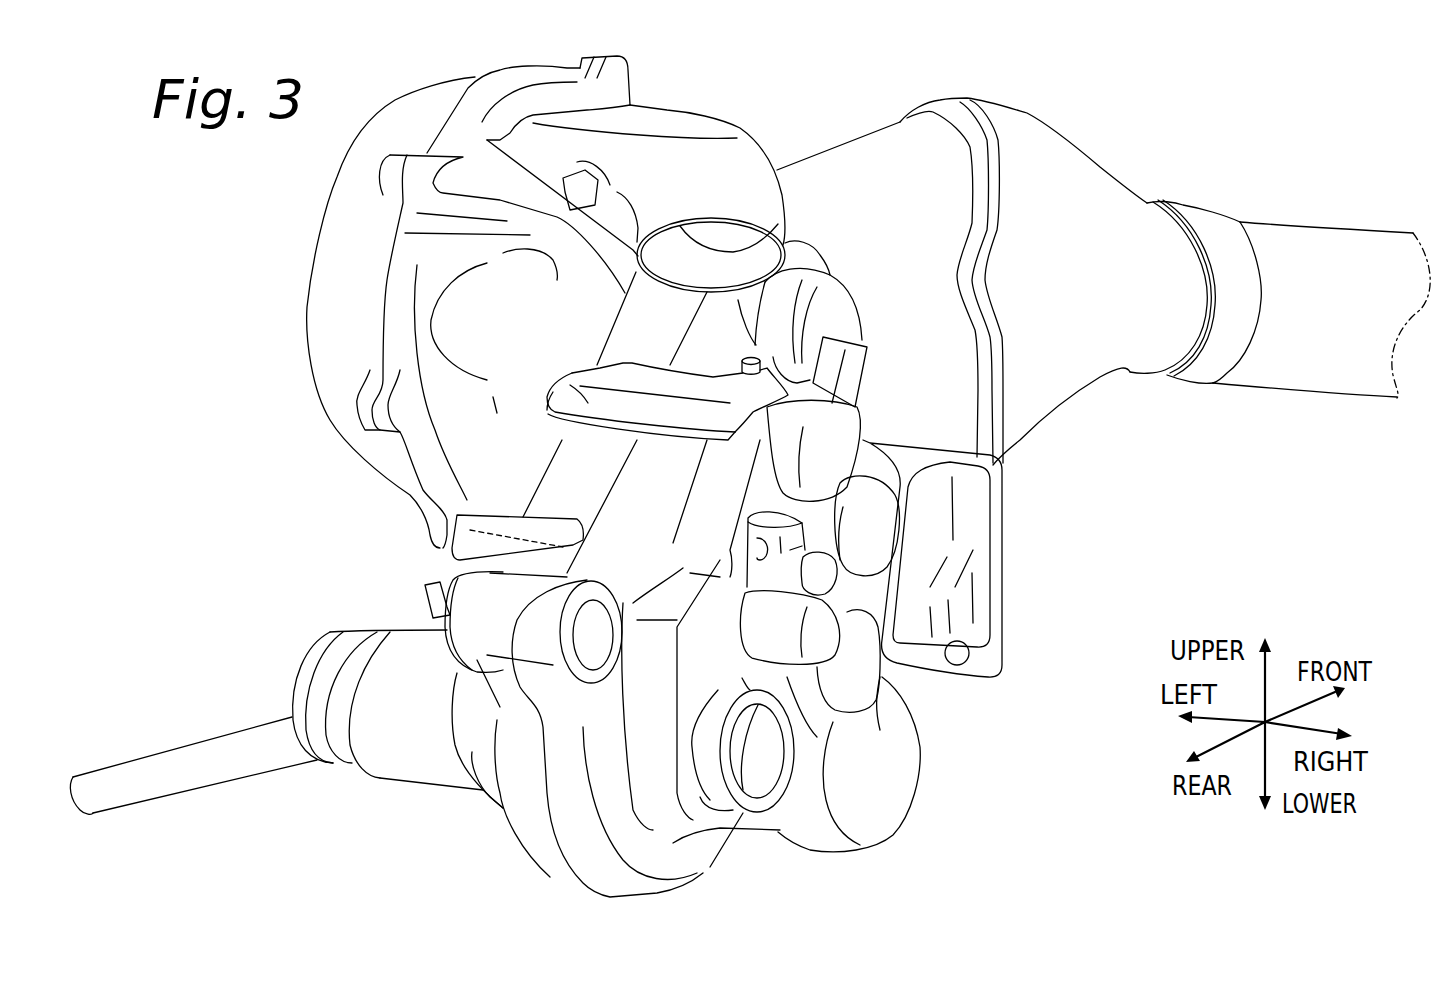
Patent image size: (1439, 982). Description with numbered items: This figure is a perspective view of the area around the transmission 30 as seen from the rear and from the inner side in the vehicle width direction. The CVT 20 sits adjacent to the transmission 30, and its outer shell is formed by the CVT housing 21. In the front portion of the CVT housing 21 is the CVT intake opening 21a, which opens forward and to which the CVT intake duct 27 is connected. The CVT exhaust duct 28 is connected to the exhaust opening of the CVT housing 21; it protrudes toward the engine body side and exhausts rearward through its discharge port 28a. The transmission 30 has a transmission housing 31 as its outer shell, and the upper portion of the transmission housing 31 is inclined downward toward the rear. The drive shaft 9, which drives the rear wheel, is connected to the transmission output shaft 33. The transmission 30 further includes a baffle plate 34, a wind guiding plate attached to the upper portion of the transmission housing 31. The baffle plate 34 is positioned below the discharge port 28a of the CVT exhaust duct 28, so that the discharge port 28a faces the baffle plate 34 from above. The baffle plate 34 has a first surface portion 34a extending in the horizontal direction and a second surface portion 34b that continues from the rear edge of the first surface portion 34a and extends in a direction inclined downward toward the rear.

The drive shaft 9 is at (172, 757).
The CVT 20 is at (471, 63).
The CVT housing 21 is at (335, 262).
The CVT intake opening 21a is at (1183, 298).
The CVT intake duct 27 is at (1355, 322).
The CVT exhaust duct 28 is at (745, 189).
The discharge port 28a is at (682, 228).
The transmission 30 is at (927, 746).
The transmission housing 31 is at (527, 862).
The transmission output shaft 33 is at (407, 645).
The baffle plate 34 is at (540, 287).
The first surface portion 34a is at (655, 378).
The second surface portion 34b is at (565, 381).